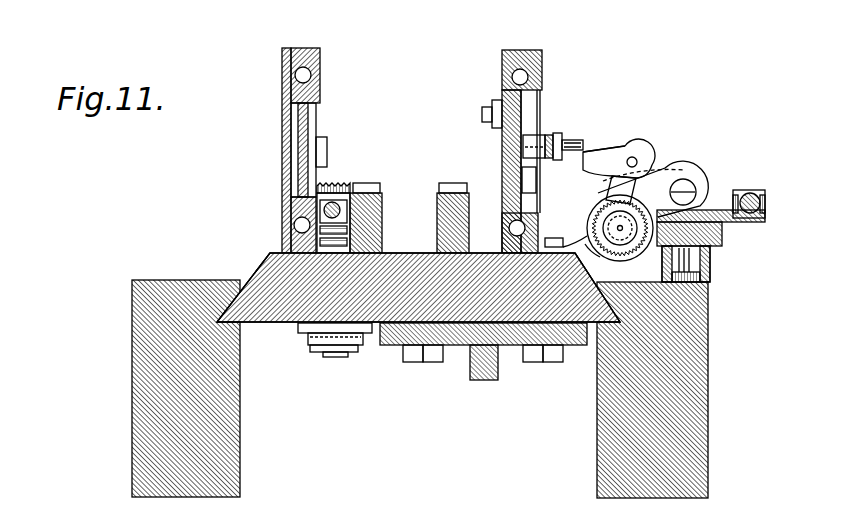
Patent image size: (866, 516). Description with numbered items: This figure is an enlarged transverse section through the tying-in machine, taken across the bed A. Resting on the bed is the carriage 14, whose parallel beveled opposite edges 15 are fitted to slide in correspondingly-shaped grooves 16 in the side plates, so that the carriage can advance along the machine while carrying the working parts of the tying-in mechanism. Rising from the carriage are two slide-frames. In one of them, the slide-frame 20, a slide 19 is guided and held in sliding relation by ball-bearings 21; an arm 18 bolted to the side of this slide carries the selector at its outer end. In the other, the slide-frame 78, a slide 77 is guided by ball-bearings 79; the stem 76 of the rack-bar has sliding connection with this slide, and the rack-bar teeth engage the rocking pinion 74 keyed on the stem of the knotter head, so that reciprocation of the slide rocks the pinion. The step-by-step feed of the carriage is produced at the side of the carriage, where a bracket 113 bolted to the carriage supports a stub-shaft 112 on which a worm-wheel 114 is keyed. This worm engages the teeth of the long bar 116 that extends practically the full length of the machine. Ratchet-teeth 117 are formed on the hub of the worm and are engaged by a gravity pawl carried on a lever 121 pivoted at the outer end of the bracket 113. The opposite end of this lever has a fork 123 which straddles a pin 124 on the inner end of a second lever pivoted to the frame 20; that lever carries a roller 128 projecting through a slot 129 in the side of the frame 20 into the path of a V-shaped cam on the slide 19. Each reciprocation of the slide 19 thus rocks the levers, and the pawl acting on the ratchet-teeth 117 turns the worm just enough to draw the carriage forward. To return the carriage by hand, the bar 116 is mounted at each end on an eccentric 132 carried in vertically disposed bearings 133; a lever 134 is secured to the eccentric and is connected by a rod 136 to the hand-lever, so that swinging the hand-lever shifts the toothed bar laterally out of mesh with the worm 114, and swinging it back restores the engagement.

The bed of the machine A is at (134, 384).
The carriage 14 is at (287, 316).
The beveled opposite edges 15 is at (232, 300).
The grooves 16 is at (217, 322).
The arm 18 is at (493, 122).
The slide 19 is at (502, 175).
The slide-frame 20 is at (502, 62).
The ball-bearings 21 is at (542, 70).
The rocking pinion 74 is at (335, 197).
The stem of the rack-bar 76 is at (352, 211).
The slide 77 is at (308, 120).
The slide-frame 78 is at (300, 48).
The ball-bearings 79 is at (310, 72).
The stub-shaft 112 is at (618, 228).
The bracket 113 is at (603, 262).
The worm-wheel 114 is at (690, 181).
The bar 116 is at (720, 237).
The ratchet-teeth 117 is at (626, 202).
The lever 121 is at (613, 150).
The fork 123 is at (557, 134).
The pin 124 is at (566, 149).
The roller 128 is at (535, 138).
The slot 129 is at (537, 180).
The eccentric 132 is at (690, 212).
The bearings 133 is at (698, 265).
The lever 134 is at (717, 212).
The rod 136 is at (765, 208).